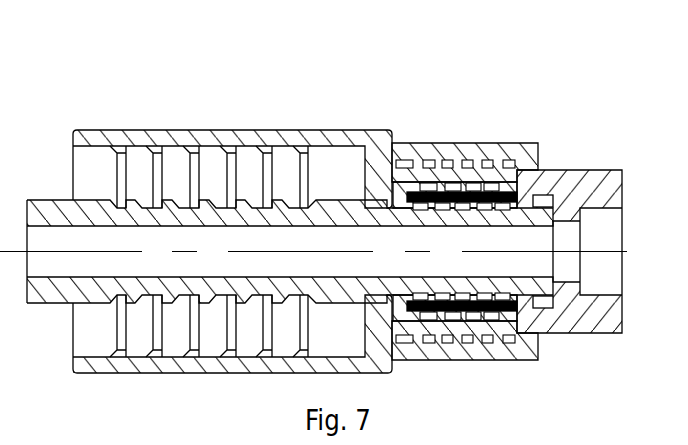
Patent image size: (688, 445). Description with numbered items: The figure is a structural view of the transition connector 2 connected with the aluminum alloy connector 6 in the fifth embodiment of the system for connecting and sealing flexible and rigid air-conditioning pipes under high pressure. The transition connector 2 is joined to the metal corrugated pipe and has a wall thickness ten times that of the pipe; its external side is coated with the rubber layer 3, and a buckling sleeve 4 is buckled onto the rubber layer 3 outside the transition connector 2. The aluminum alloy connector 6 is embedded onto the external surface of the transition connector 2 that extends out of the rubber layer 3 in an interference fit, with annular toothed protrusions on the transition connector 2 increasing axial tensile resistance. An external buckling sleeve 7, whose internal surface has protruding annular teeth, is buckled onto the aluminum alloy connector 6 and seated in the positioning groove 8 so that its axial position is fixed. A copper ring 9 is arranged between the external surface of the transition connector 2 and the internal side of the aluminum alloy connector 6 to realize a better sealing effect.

The transition connector 2 is at (196, 236).
The rubber layer 3 is at (163, 182).
The buckling sleeve 4 is at (333, 141).
The aluminum alloy connector 6 is at (518, 210).
The external buckling sleeve 7 is at (437, 145).
The positioning groove 8 is at (522, 192).
The copper ring 9 is at (486, 183).